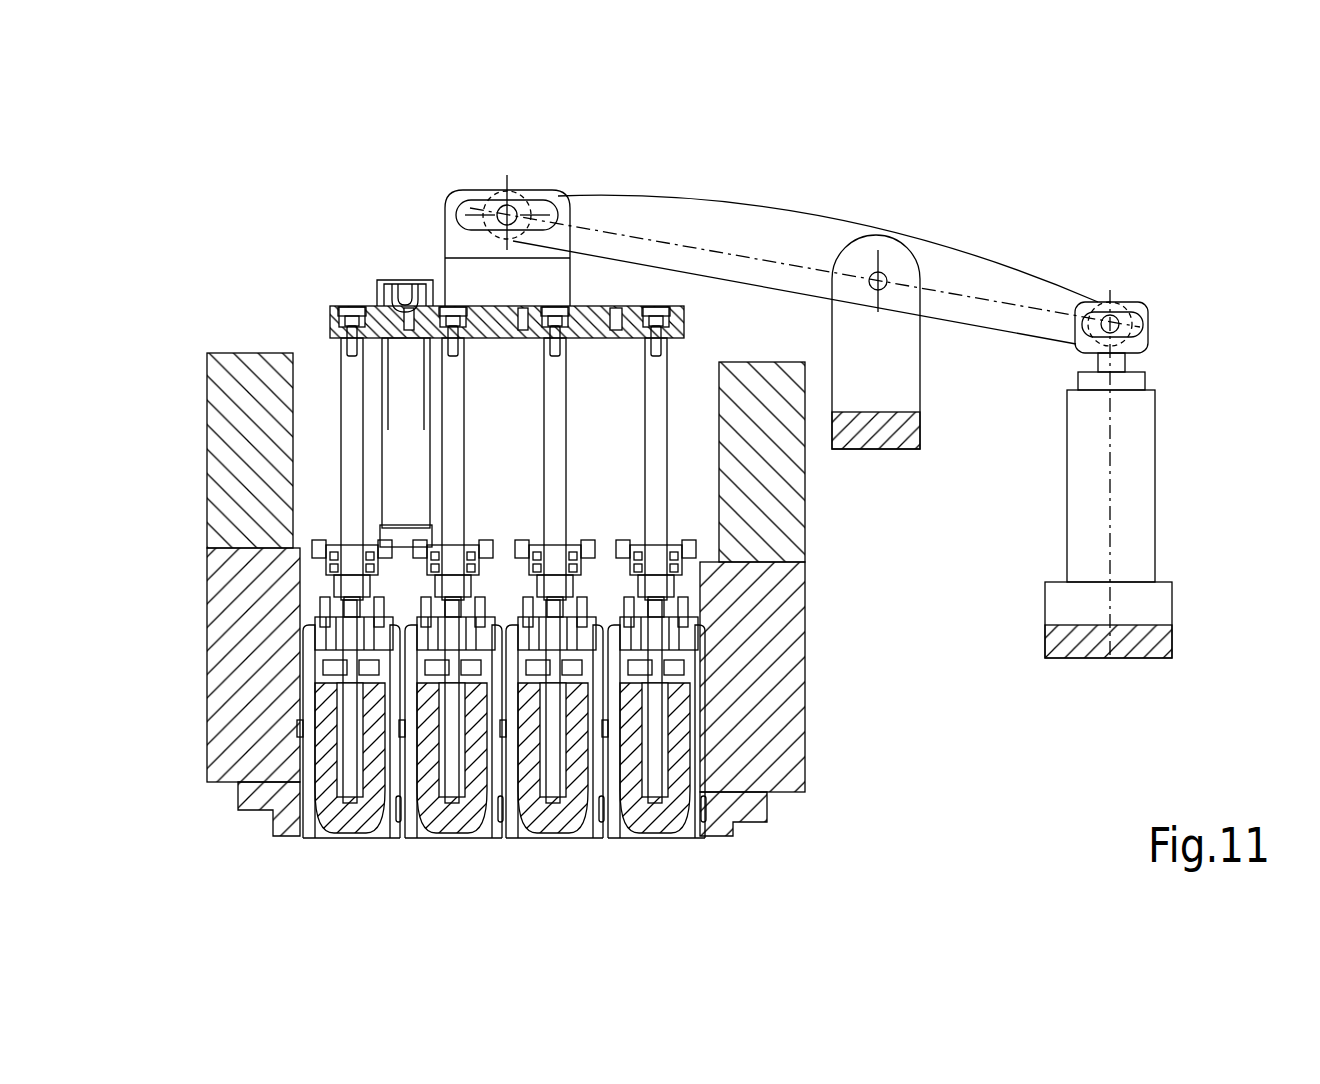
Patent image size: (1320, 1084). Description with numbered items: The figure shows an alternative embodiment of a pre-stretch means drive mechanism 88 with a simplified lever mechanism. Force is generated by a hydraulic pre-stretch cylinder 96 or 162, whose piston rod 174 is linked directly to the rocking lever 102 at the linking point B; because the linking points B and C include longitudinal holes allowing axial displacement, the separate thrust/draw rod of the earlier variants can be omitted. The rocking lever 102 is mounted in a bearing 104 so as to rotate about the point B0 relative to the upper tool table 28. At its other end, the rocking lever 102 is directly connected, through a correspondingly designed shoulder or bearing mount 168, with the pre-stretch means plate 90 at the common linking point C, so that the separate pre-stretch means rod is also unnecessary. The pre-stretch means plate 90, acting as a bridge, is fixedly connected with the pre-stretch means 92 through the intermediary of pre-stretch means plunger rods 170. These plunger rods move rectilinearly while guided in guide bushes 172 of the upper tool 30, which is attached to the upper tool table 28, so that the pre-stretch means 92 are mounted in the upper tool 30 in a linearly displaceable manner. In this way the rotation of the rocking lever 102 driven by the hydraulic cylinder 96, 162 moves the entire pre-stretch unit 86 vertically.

The upper tool table 28 is at (222, 492).
The upper tool 30 is at (205, 700).
The pre-stretch unit 86 is at (885, 391).
The pre-stretch means drive mechanism 88 is at (407, 345).
The pre-stretch means plate 90 is at (331, 318).
The pre-stretch means 92 is at (627, 838).
The hydraulic pre-stretch cylinder 96 is at (1172, 435).
The hydraulic pre-stretch cylinder 162 is at (1172, 435).
The rocking lever 102 is at (778, 238).
The bearing 104 is at (929, 304).
The shoulder or bearing mount 168 is at (480, 198).
The pre-stretch means plunger rod 170 is at (350, 438).
The guide bush 172 is at (318, 595).
The piston rod 174 is at (1130, 363).
The linking point B is at (1110, 318).
The point B0 is at (884, 272).
The linking point C is at (505, 218).